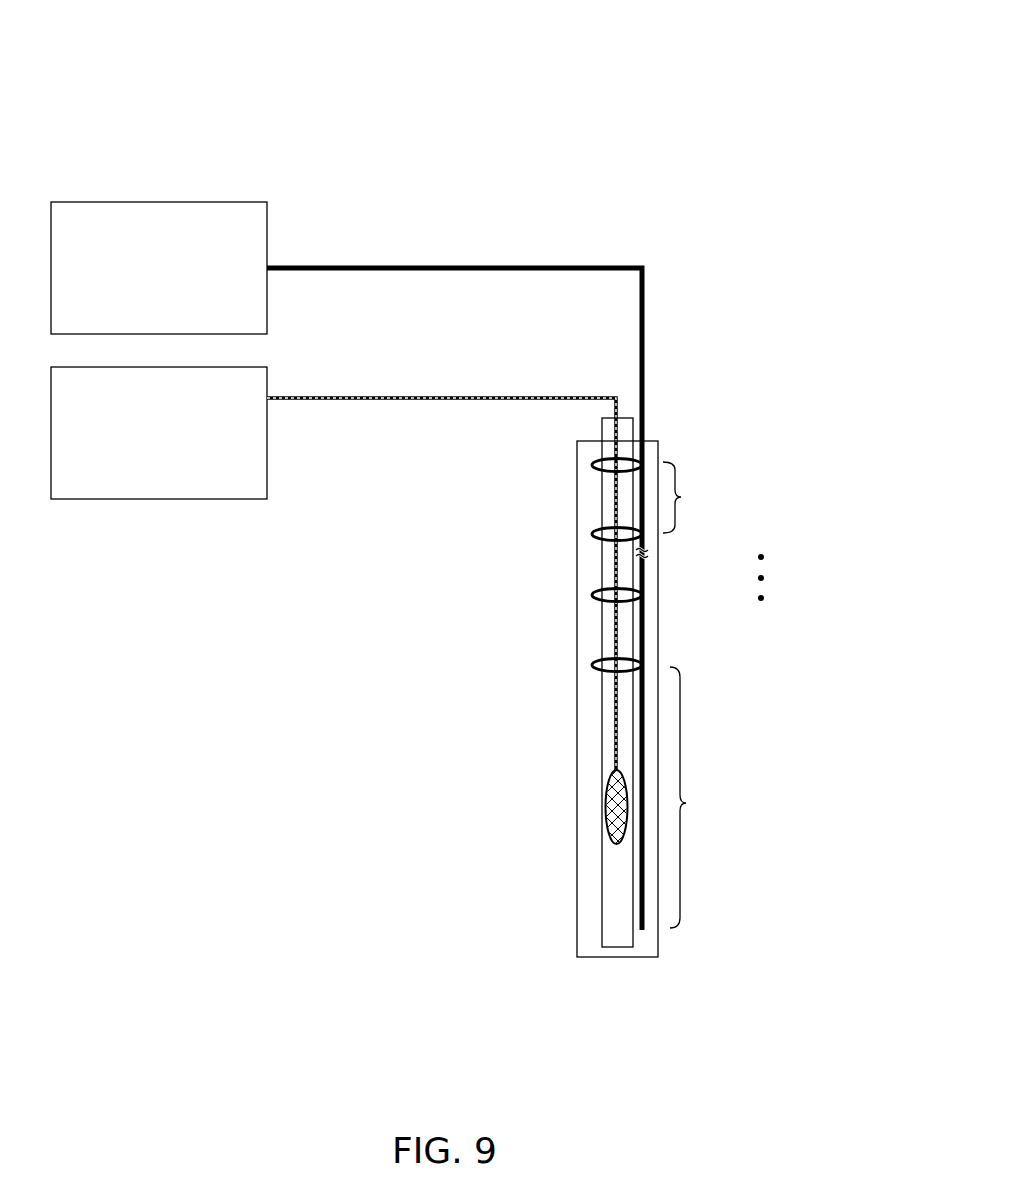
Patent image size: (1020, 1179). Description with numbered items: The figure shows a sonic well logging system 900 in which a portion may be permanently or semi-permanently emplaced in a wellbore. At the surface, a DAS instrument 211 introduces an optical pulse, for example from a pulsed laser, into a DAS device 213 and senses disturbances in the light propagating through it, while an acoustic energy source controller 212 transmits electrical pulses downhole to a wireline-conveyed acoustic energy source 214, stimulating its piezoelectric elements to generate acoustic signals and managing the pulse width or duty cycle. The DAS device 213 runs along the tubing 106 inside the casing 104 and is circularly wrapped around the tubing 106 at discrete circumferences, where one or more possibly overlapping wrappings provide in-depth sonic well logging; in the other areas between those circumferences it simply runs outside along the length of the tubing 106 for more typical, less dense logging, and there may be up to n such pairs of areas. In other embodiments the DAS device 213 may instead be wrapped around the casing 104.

The sonic well logging system 900 is at (549, 104).
The DAS instrument 211 is at (136, 284).
The acoustic energy source controller 212 is at (136, 444).
The DAS device 213 is at (644, 322).
The casing 104 is at (577, 465).
The tubing 106 is at (602, 643).
The acoustic energy source 214 is at (605, 812).